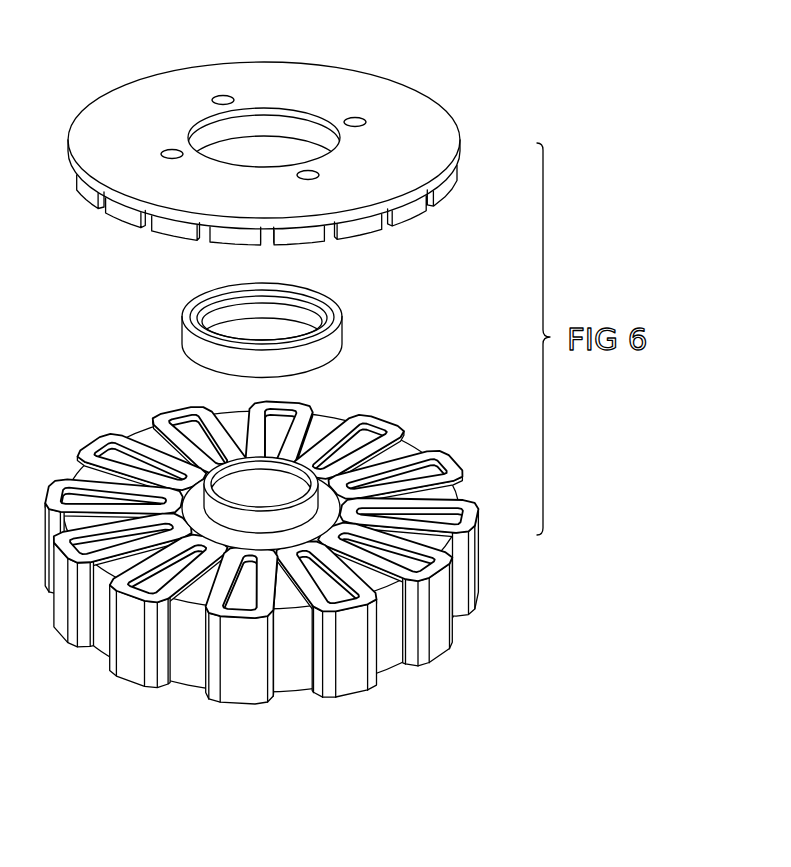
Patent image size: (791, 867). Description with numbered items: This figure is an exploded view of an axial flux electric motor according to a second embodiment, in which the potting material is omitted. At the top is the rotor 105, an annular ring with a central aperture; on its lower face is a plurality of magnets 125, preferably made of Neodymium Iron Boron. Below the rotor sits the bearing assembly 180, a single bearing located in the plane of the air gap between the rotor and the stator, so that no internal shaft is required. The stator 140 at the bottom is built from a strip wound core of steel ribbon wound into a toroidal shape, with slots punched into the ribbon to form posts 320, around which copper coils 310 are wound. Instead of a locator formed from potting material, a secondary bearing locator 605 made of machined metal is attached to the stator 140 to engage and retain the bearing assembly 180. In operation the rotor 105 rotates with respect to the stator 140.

The rotor 105 is at (149, 108).
The magnets 125 is at (180, 232).
The bearing assembly 180 is at (168, 347).
The stator 140 is at (276, 548).
The copper coils 310 is at (435, 638).
The posts 320 is at (293, 683).
The secondary bearing locator 605 is at (325, 513).